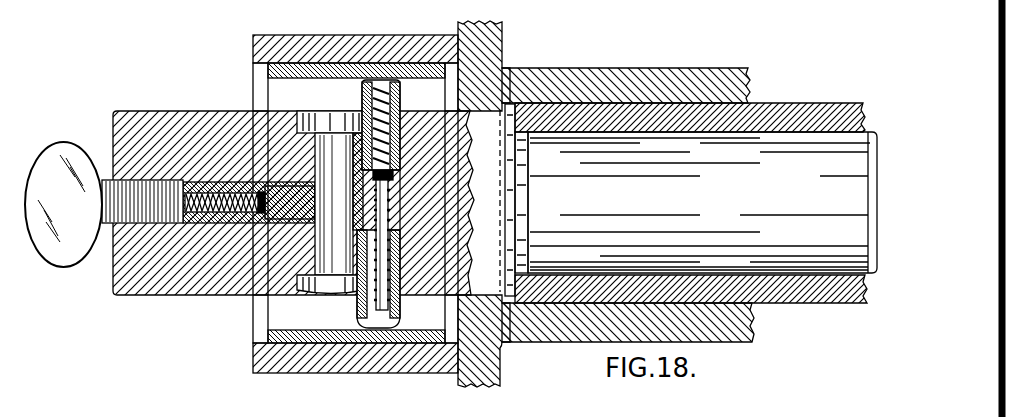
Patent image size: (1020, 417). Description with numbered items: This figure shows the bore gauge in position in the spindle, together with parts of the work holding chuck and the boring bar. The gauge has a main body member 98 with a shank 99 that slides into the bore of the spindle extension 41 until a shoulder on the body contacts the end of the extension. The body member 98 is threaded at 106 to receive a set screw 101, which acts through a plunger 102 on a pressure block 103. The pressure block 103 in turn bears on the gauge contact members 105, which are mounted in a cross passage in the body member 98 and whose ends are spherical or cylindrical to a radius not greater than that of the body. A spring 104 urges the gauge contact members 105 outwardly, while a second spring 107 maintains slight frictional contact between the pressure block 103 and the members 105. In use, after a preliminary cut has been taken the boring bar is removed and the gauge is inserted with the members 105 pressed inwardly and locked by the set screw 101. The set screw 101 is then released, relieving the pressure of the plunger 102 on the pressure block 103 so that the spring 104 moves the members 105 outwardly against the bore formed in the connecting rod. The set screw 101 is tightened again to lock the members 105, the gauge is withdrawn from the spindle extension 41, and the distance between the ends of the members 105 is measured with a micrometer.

The spindle extension 41 is at (856, 84).
The main body member 98 is at (197, 282).
The shank 99 is at (789, 138).
The set screw 101 is at (82, 152).
The plunger 102 is at (283, 208).
The pressure block 103 is at (338, 89).
The spring 104 is at (388, 90).
The gauge contact members 105 is at (398, 96).
The threaded portion 106 is at (149, 228).
The spring 107 is at (213, 190).